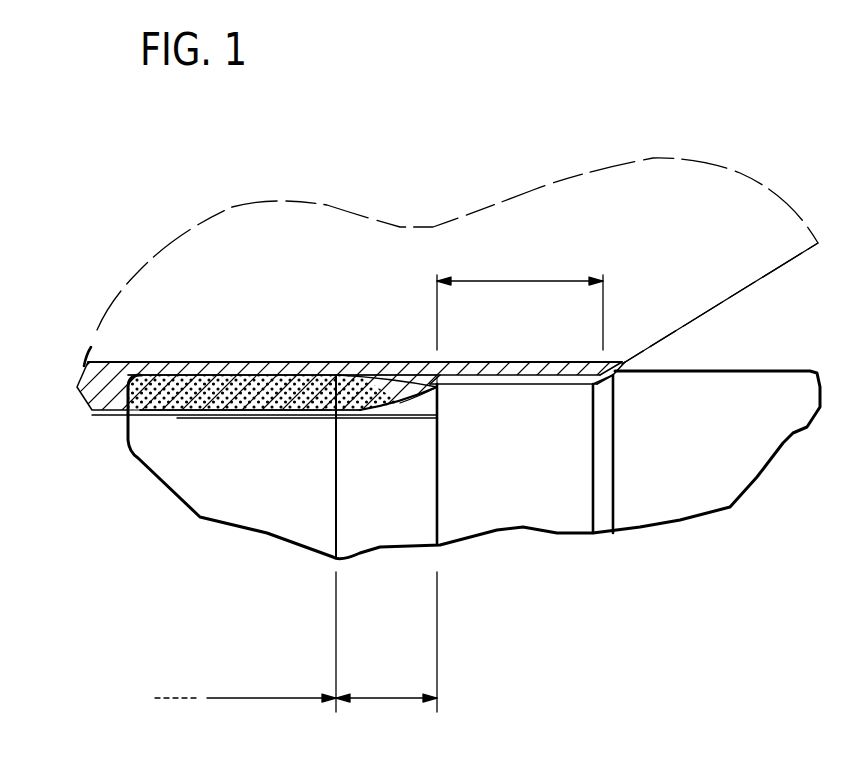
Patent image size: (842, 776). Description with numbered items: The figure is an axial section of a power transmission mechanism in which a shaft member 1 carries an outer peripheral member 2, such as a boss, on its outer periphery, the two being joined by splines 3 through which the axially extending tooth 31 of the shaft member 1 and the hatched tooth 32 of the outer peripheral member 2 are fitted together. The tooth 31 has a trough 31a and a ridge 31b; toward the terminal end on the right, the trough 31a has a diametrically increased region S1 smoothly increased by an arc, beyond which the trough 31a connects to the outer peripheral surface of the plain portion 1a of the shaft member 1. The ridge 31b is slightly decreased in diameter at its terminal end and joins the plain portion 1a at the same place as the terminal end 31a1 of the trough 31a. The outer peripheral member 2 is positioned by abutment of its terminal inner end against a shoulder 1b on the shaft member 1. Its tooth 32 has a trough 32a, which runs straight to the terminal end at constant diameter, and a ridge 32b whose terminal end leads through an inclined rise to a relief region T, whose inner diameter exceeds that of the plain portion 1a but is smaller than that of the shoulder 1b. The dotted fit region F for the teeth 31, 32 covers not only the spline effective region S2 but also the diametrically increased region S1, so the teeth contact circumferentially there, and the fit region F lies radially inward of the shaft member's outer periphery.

The shaft member 1 is at (557, 537).
The plain portion 1a is at (512, 383).
The shoulder 1b is at (604, 382).
The outer peripheral member 2 is at (412, 218).
The splines 3 is at (257, 423).
The tooth of the shaft member 31 is at (125, 417).
The trough 31a is at (297, 420).
The terminal end of the trough 31a1 is at (440, 390).
The ridge 31b is at (191, 376).
The tooth of the outer peripheral member 32 is at (237, 360).
The trough 32a is at (283, 362).
The ridge 32b is at (177, 420).
The fit region F is at (353, 381).
The relief region T is at (520, 295).
The diametrically increased region S1 is at (386, 642).
The spline effective region S2 is at (245, 685).